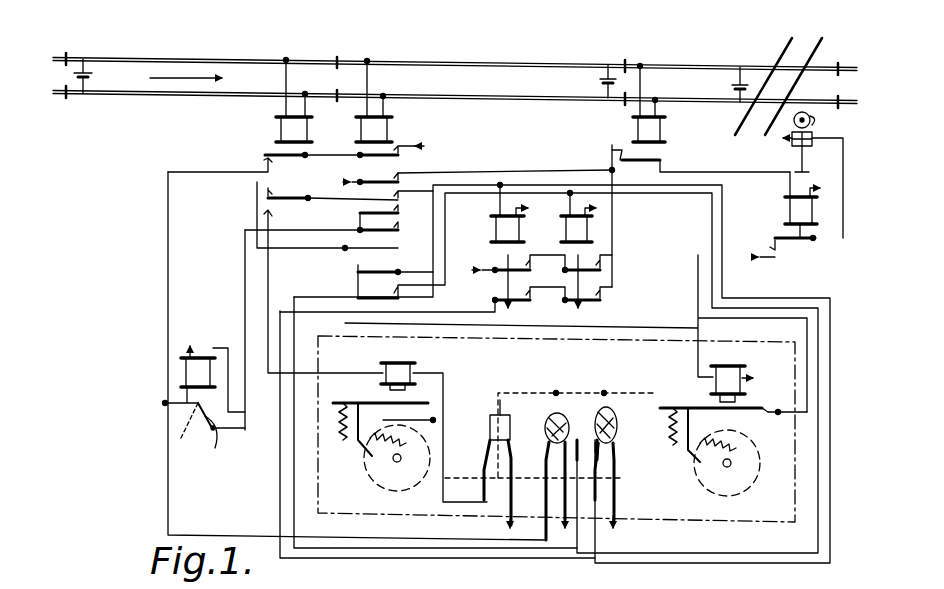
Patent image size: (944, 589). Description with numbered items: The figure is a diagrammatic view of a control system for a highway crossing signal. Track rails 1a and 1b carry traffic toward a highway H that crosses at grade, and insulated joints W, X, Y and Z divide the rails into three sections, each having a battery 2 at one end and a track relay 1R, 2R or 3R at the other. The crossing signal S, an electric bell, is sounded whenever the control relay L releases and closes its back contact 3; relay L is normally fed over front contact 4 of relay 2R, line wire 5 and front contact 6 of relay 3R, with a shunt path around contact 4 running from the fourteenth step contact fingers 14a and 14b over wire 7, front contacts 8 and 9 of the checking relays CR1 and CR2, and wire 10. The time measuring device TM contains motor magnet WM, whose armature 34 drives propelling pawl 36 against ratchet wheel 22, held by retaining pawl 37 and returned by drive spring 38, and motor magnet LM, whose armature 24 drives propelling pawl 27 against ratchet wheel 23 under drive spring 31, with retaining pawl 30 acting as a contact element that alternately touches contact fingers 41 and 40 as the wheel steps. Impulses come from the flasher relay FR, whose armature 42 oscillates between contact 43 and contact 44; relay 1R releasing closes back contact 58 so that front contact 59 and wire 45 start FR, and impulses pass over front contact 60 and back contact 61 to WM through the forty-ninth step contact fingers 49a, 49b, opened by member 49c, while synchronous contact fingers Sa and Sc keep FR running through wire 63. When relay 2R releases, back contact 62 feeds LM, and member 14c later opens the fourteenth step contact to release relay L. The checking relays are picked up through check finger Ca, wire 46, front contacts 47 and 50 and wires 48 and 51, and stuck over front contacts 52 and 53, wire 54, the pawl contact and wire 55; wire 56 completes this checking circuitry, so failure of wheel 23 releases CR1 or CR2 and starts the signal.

The track rail 1a is at (455, 54).
The track rail 1b is at (455, 108).
The battery 2 is at (88, 76).
The back contact of relay L 3 is at (786, 252).
The front contact of relay 2R 4 is at (372, 182).
The line wire 5 is at (550, 170).
The front contact of relay 3R 6 is at (610, 153).
The wire 7 is at (280, 518).
The front contact of relay CR1 8 is at (529, 300).
The front contact of relay CR2 9 is at (590, 300).
The wire 10 is at (612, 214).
The track relay 1R is at (282, 132).
The track relay 2R is at (388, 130).
The track relay 3R is at (660, 130).
The insulated rail joint W is at (62, 45).
The insulated rail joint X is at (335, 47).
The insulated rail joint Y is at (622, 50).
The insulated rail joint Z is at (827, 57).
The highway H is at (788, 48).
The highway crossing signal S is at (796, 154).
The control relay L is at (812, 211).
The checking relay CR1 is at (492, 230).
The checking relay CR2 is at (590, 228).
The flasher relay FR is at (208, 352).
The motor magnet WM is at (433, 423).
The motor magnet LM is at (739, 374).
The time measuring device TM is at (722, 524).
The ratchet wheel 22 is at (378, 480).
The ratchet wheel 23 is at (750, 480).
The armature 24 is at (740, 402).
The propelling pawl 27 is at (704, 466).
The retaining pawl 30 is at (735, 418).
The drive spring 31 is at (664, 432).
The armature 34 is at (420, 403).
The propelling pawl 36 is at (362, 452).
The retaining pawl 37 is at (398, 420).
The drive spring 38 is at (342, 440).
The contact finger 40 is at (768, 408).
The contact finger 41 is at (760, 446).
The armature of relay FR 42 is at (207, 445).
The contact of relay FR 43 is at (184, 432).
The second contact of relay FR 44 is at (218, 432).
The wire 45 is at (168, 380).
The wire 46 is at (292, 524).
The front contact of relay 2R 47 is at (392, 272).
The wire 48 is at (350, 199).
The contact finger 49a is at (484, 458).
The contact finger 49b is at (511, 490).
The insulation contact actuating member 49c is at (505, 392).
The front contact of relay 2R 50 is at (378, 289).
The wire 51 is at (608, 373).
The front contact of relay CR1 52 is at (535, 252).
The front contact of relay CR2 53 is at (602, 266).
The wire 54 is at (710, 310).
The wire 55 is at (586, 361).
The wire 56 is at (818, 326).
The back contact of relay 1R 58 is at (262, 160).
The front contact of relay 2R 59 is at (399, 153).
The front contact of relay 2R 60 is at (391, 214).
The back contact of relay 1R 61 is at (271, 212).
The back contact of relay 2R 62 is at (334, 232).
The wire 63 is at (168, 504).
The contact finger 14a is at (593, 443).
The contact finger 14b is at (636, 450).
The insulation contact actuating member 14c is at (632, 415).
The contact finger Sa is at (556, 380).
The insulation contact actuating member Sc is at (604, 393).
The contact finger Ca is at (580, 494).